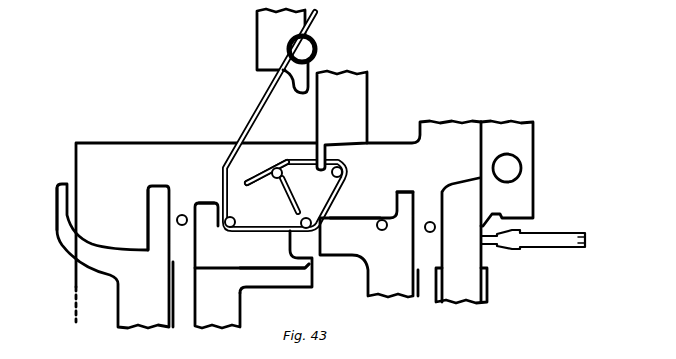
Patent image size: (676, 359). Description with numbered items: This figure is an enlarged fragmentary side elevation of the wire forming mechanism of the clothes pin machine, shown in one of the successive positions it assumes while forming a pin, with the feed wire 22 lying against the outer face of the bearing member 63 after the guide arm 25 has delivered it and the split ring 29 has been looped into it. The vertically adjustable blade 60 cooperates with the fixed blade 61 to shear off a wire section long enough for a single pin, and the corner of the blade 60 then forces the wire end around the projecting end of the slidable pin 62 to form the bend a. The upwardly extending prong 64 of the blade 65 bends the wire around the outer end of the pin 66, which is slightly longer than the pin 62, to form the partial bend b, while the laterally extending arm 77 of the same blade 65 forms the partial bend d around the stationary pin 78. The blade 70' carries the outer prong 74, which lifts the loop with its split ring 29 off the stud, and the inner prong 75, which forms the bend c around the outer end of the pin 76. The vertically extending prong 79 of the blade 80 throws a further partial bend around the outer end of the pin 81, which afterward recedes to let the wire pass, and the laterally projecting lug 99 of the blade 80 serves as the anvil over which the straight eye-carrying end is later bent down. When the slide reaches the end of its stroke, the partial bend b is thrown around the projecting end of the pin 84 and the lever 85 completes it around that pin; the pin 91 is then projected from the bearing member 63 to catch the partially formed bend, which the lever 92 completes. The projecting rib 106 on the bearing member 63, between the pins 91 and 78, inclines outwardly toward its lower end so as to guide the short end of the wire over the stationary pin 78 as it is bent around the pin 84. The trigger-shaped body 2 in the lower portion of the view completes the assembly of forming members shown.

The trigger 2 is at (228, 233).
The feed wire 22 is at (258, 105).
The guide arm 25 is at (537, 250).
The split ring 29 is at (318, 50).
The vertically adjustable blade 60 is at (461, 212).
The fixed blade 61 is at (507, 173).
The slidable pin 62 is at (430, 222).
The bearing member 63 is at (147, 143).
The upwardly extending prong 64 is at (397, 200).
The blade 65 is at (369, 244).
The pin 66 is at (386, 229).
The blade 70' is at (115, 256).
The outer prong 74 is at (56, 215).
The inner prong 75 is at (148, 212).
The pin 76 is at (182, 225).
The laterally extending arm 77 is at (348, 219).
The stationary pin 78 is at (308, 237).
The vertically extending prong 79 is at (203, 203).
The blade 80 is at (252, 296).
The pin 81 is at (237, 220).
The pin 84 is at (348, 172).
The lever 85 is at (367, 106).
The pin 91 is at (277, 167).
The lever 92 is at (257, 47).
The laterally projecting lug 99 is at (313, 280).
The projecting rib 106 is at (302, 195).
The bend a is at (287, 159).
The partial bend b is at (345, 159).
The bend c is at (222, 166).
The partial bend d is at (321, 235).